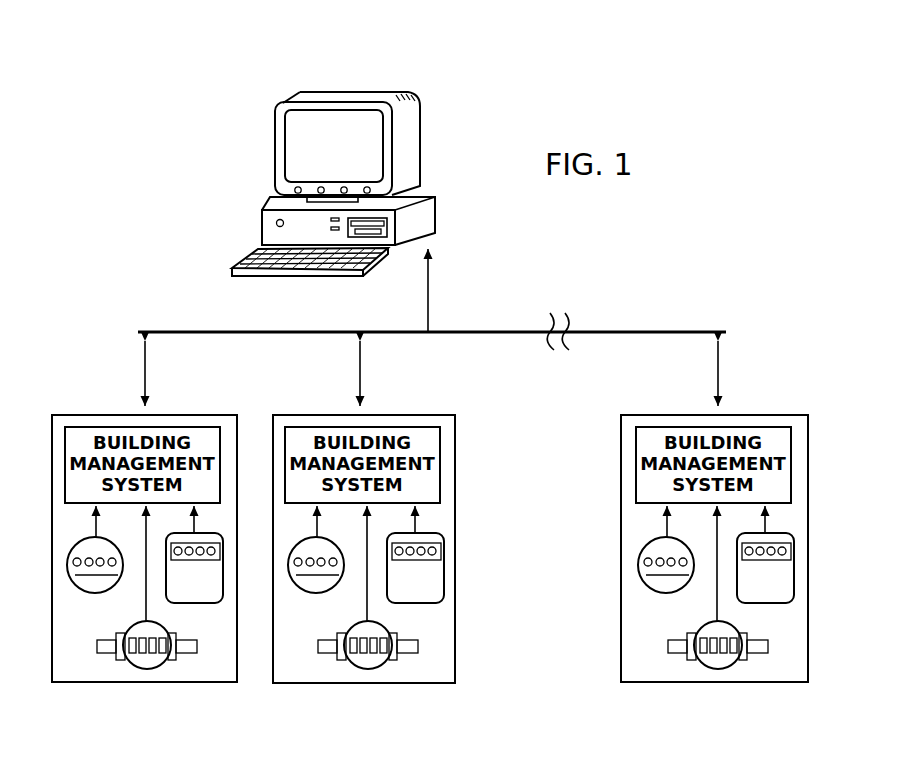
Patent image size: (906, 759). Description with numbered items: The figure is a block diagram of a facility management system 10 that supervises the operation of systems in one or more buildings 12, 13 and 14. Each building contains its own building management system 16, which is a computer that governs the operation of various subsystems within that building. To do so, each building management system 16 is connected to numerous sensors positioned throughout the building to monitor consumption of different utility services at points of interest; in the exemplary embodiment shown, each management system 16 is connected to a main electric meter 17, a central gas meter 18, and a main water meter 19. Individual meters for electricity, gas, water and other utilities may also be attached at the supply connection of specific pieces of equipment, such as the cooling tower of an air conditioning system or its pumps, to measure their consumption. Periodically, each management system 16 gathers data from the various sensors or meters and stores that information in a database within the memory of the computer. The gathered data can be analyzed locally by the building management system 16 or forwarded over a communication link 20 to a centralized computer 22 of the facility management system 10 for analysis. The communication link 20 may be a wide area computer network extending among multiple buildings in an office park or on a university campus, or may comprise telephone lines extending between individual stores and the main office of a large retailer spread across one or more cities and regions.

The facility management system 10 is at (516, 267).
The building 12 is at (125, 414).
The building 13 is at (335, 414).
The building 14 is at (693, 414).
The building management system 16 is at (173, 427).
The main electric meter 17 is at (327, 593).
The central gas meter 18 is at (400, 603).
The main water meter 19 is at (357, 658).
The communication link 20 is at (225, 331).
The centralized computer 22 is at (262, 233).